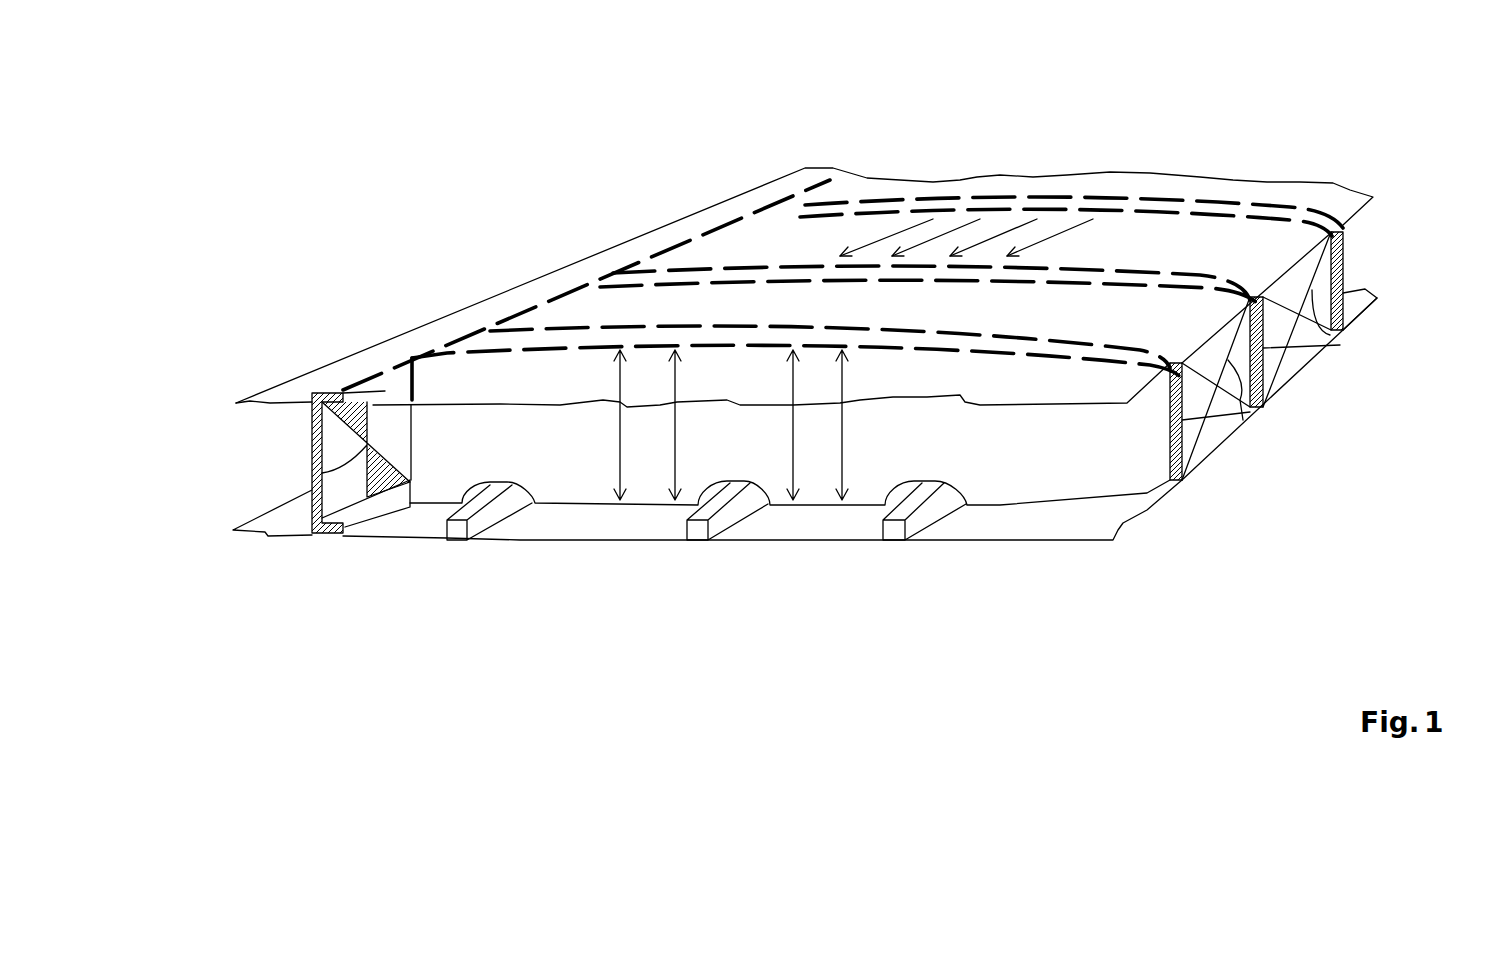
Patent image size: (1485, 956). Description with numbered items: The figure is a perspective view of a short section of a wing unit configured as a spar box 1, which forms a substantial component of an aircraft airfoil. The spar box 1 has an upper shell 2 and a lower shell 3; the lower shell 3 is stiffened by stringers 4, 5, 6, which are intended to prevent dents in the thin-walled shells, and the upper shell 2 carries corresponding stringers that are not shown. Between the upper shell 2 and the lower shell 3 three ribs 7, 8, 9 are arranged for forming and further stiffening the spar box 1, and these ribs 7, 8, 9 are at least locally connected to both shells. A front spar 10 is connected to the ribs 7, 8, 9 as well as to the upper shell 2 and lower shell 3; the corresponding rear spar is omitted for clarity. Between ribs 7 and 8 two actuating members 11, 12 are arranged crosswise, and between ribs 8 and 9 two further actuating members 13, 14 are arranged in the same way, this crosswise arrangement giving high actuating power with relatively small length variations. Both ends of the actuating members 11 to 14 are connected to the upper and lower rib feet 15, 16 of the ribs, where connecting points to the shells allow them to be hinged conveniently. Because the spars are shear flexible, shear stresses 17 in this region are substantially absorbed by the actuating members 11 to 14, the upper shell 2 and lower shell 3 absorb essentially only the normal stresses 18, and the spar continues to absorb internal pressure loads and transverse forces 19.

The spar box 1 is at (1052, 94).
The upper shell 2 is at (535, 288).
The lower shell 3 is at (552, 543).
The stringer 4 is at (458, 528).
The stringer 5 is at (695, 530).
The stringer 6 is at (892, 530).
The rib 7 is at (1117, 343).
The rib 8 is at (1203, 272).
The rib 9 is at (1293, 217).
The front spar 10 is at (312, 438).
The actuating member 11 is at (1243, 420).
The actuating member 12 is at (1200, 418).
The actuating member 13 is at (1312, 365).
The actuating member 14 is at (1330, 333).
The upper rib foot 15 is at (1103, 406).
The lower rib foot 16 is at (1098, 505).
The shear stresses 17 is at (322, 473).
The normal stresses 18 is at (880, 223).
The transverse forces 19 is at (594, 360).